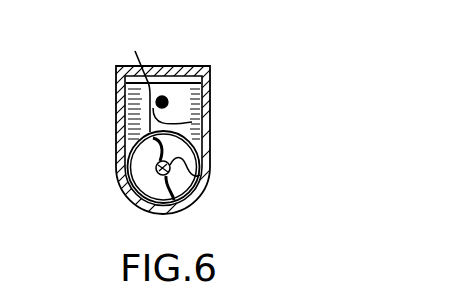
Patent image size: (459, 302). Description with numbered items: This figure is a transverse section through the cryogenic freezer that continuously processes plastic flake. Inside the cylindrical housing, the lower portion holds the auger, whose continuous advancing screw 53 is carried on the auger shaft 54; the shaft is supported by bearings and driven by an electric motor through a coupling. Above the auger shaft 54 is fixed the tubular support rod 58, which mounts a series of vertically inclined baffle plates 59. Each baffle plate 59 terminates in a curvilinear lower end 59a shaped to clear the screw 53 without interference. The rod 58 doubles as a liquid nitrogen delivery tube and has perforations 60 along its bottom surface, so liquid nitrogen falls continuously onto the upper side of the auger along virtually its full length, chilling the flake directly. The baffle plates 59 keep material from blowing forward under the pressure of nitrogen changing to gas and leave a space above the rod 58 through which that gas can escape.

The continuous advancing screw 53 is at (138, 162).
The auger shaft 54 is at (205, 180).
The tubular support rod 58 is at (168, 100).
The baffle plates 59 is at (137, 114).
The curvilinear lower ends 59a is at (149, 77).
The perforations 60 is at (208, 120).